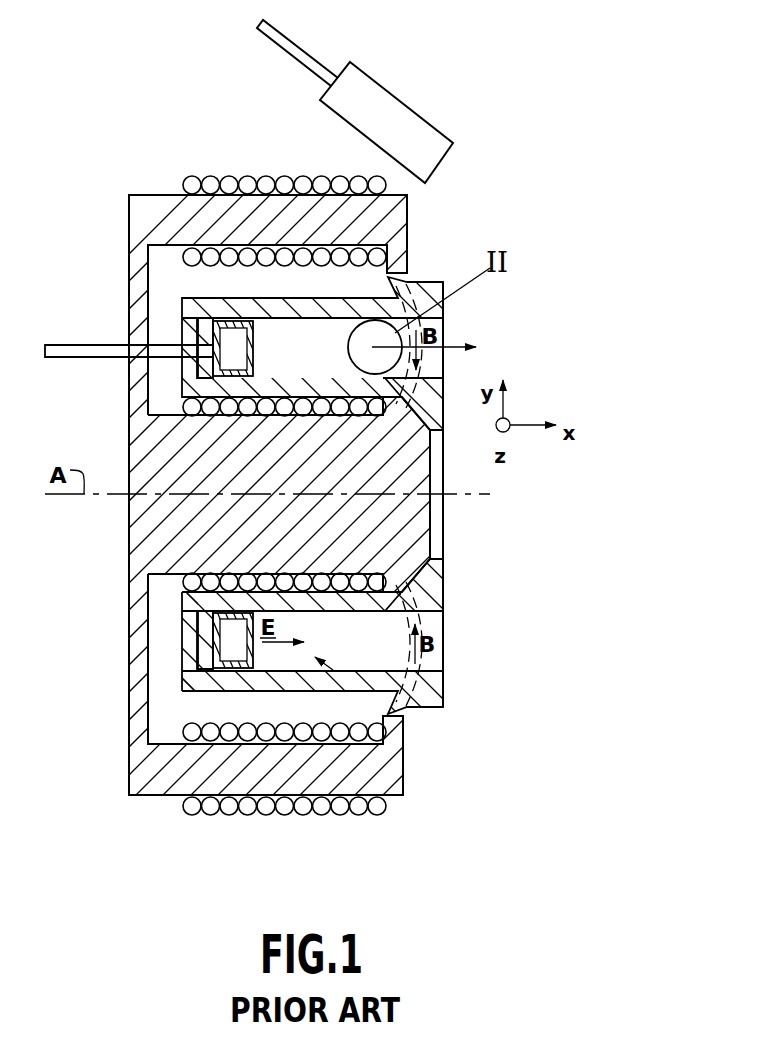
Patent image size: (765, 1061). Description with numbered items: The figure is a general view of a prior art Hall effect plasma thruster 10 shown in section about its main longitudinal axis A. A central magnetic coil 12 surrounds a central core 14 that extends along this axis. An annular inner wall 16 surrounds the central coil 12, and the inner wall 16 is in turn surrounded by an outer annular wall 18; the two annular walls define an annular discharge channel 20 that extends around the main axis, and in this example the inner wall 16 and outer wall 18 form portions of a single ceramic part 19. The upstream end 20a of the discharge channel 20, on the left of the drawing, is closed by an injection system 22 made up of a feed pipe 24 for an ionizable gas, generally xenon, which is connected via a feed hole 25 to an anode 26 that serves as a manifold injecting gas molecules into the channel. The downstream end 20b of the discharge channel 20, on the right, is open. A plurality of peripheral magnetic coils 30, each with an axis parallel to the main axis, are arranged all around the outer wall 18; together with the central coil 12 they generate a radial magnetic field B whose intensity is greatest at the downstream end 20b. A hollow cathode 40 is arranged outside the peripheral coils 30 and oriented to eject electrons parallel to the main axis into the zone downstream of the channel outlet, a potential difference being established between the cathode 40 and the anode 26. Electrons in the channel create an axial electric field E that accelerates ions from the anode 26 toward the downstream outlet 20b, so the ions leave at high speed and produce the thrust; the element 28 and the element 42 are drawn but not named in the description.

The Hall effect plasma thruster 10 is at (174, 151).
The central magnetic coil 12 is at (180, 413).
The central core 14 is at (418, 537).
The annular inner wall 16 is at (303, 605).
The outer annular wall 18 is at (228, 687).
The single ceramic part 19 is at (170, 629).
The annular discharge channel 20 is at (380, 729).
The upstream end of the discharge channel 20a is at (262, 658).
The downstream end of the discharge channel 20b is at (440, 662).
The injection system 22 is at (196, 331).
The feed pipe 24 is at (60, 345).
The feed hole 25 is at (242, 345).
The anode 26 is at (280, 303).
The ball 28 is at (270, 360).
The peripheral magnetic coils 30 is at (264, 178).
The hollow cathode 40 is at (392, 110).
The seal 42 is at (397, 268).